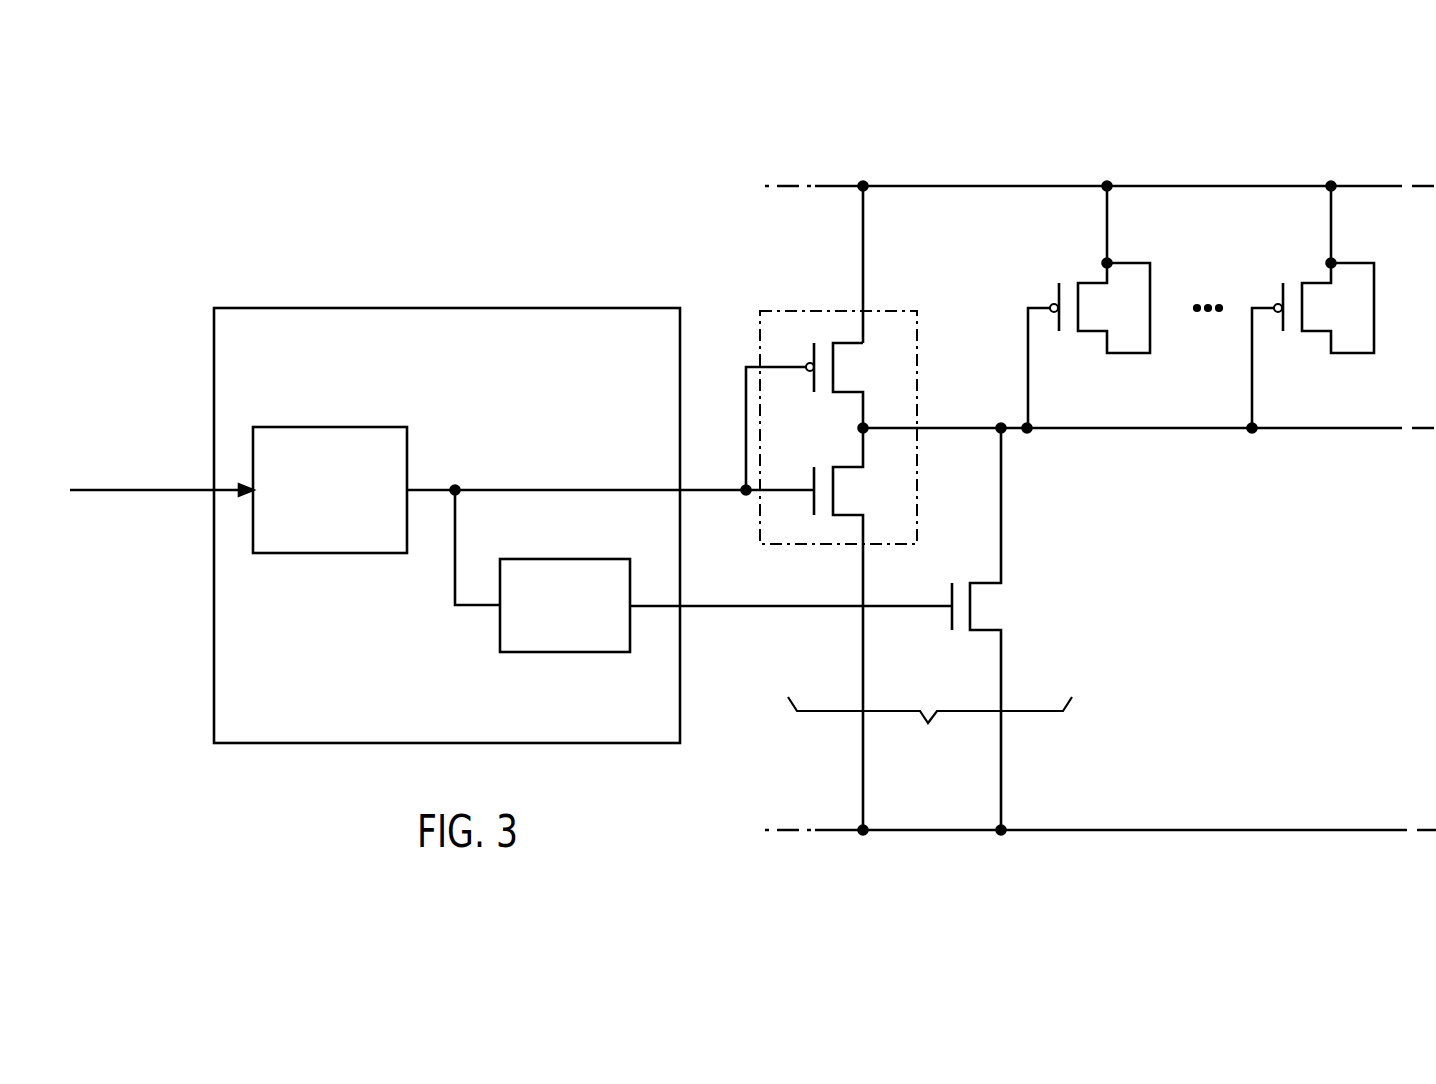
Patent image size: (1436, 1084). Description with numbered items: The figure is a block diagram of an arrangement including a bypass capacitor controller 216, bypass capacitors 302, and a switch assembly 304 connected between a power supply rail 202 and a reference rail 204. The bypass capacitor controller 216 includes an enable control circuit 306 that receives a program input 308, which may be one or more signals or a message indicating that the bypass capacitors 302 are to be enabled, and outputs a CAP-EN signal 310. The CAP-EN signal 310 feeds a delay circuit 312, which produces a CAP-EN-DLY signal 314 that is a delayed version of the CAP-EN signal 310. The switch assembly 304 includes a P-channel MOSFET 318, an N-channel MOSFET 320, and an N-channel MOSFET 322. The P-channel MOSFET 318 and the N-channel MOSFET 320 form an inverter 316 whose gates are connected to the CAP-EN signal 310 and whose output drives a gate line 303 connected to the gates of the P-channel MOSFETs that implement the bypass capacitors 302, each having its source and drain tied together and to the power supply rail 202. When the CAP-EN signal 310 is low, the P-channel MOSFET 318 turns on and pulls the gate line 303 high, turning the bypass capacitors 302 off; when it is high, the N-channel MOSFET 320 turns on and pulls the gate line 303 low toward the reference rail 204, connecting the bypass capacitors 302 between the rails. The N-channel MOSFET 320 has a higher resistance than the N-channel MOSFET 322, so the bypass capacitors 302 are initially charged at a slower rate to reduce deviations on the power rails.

The power supply rail 202 is at (1262, 186).
The reference rail 204 is at (1212, 830).
The bypass capacitor controller 216 is at (448, 308).
The bypass capacitors 302 is at (1093, 283).
The gate line 303 is at (1121, 428).
The switch assembly 304 is at (930, 757).
The enable control circuit 306 is at (332, 553).
The program input 308 is at (157, 490).
The CAP-EN signal 310 is at (538, 492).
The delay circuit 312 is at (566, 652).
The CAP-EN-DLY signal 314 is at (790, 608).
The inverter 316 is at (809, 311).
The P-channel MOSFET 318 is at (855, 368).
The N-channel MOSFET 320 is at (855, 490).
The N-channel MOSFET 322 is at (995, 607).